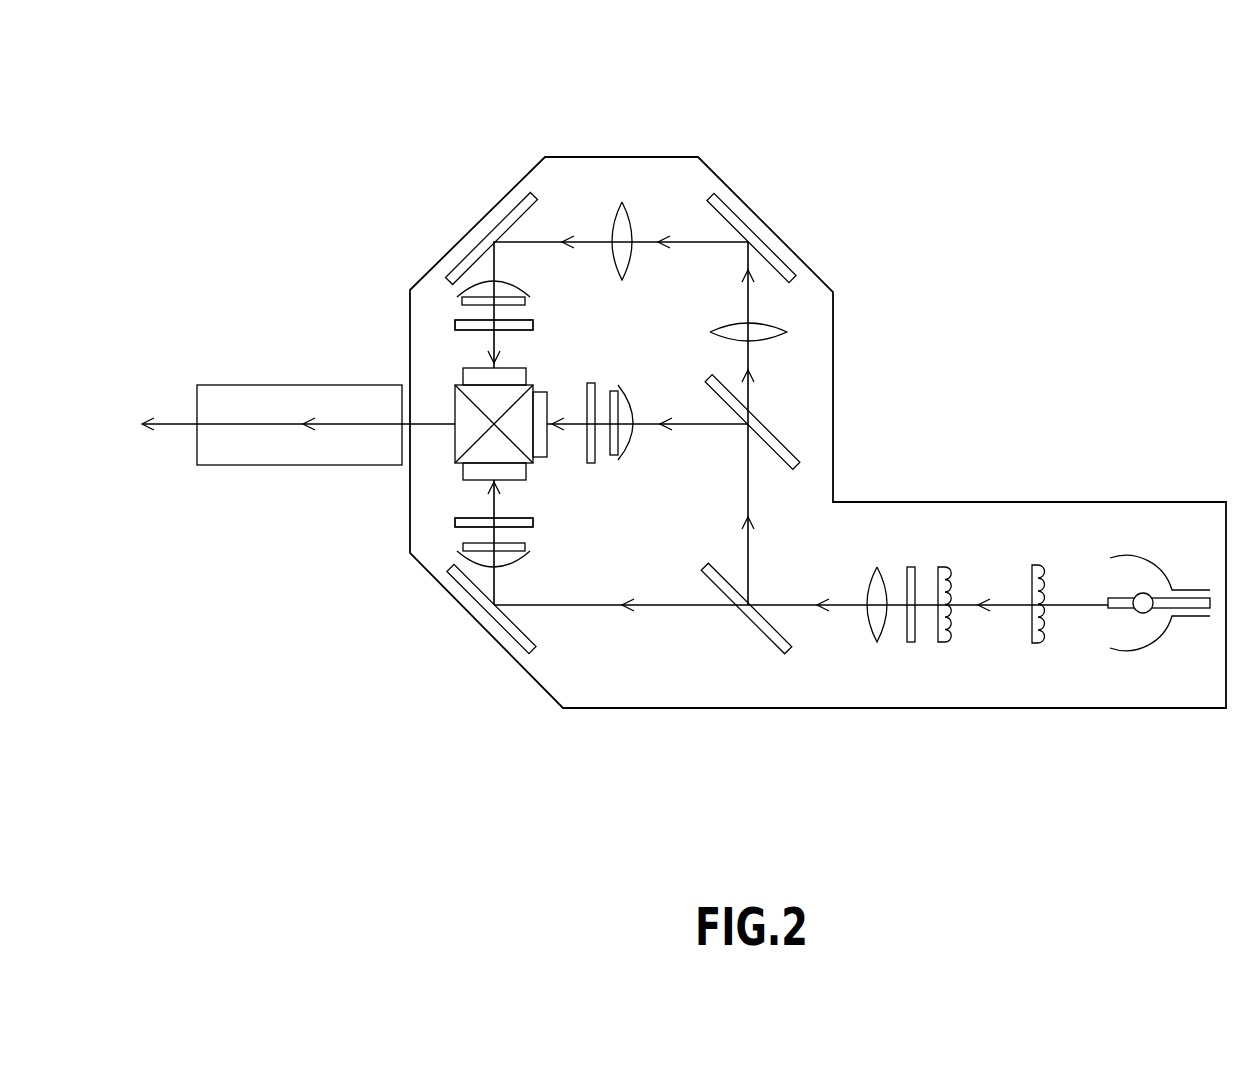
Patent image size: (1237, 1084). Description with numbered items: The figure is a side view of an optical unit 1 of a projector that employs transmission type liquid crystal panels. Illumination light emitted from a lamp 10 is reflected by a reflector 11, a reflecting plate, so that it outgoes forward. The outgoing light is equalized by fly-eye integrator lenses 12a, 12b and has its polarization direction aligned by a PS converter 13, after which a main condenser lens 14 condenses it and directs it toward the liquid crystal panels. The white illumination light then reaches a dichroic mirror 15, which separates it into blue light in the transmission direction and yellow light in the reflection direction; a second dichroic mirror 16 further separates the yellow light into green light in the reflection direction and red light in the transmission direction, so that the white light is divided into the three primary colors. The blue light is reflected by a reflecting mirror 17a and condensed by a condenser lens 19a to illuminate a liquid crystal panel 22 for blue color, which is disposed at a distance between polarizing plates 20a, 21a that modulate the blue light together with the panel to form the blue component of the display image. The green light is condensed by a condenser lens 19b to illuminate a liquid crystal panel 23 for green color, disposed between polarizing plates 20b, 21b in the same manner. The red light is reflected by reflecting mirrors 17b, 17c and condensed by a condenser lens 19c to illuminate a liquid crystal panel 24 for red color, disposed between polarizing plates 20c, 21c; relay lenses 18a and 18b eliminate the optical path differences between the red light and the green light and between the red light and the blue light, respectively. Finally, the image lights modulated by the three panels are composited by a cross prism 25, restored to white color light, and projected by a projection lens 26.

The optical unit 1 is at (1114, 143).
The lamp 10 is at (1143, 598).
The reflector 11 is at (1115, 558).
The fly-eye integrator lens 12a is at (1035, 645).
The fly-eye integrator lens 12b is at (945, 645).
The PS converter 13 is at (913, 645).
The main condenser lens 14 is at (880, 645).
The dichroic mirror 15 is at (760, 625).
The dichroic mirror 16 is at (775, 437).
The reflecting mirror 17a is at (500, 627).
The reflecting mirror 17b is at (775, 243).
The reflecting mirror 17c is at (500, 212).
The relay lens 18a is at (787, 332).
The relay lens 18b is at (615, 203).
The condenser lens 19a is at (512, 560).
The condenser lens 19b is at (632, 448).
The condenser lens 19c is at (510, 288).
The polarizing plate 20a is at (458, 547).
The polarizing plate 20b is at (618, 390).
The polarizing plate 20c is at (462, 300).
The polarizing plate 21a is at (463, 475).
The polarizing plate 21b is at (540, 392).
The polarizing plate 21c is at (463, 375).
The liquid crystal panel for blue color 22 is at (455, 522).
The liquid crystal panel for green color 23 is at (592, 465).
The liquid crystal panel for red color 24 is at (455, 325).
The cross prism 25 is at (455, 455).
The projection lens 26 is at (217, 393).